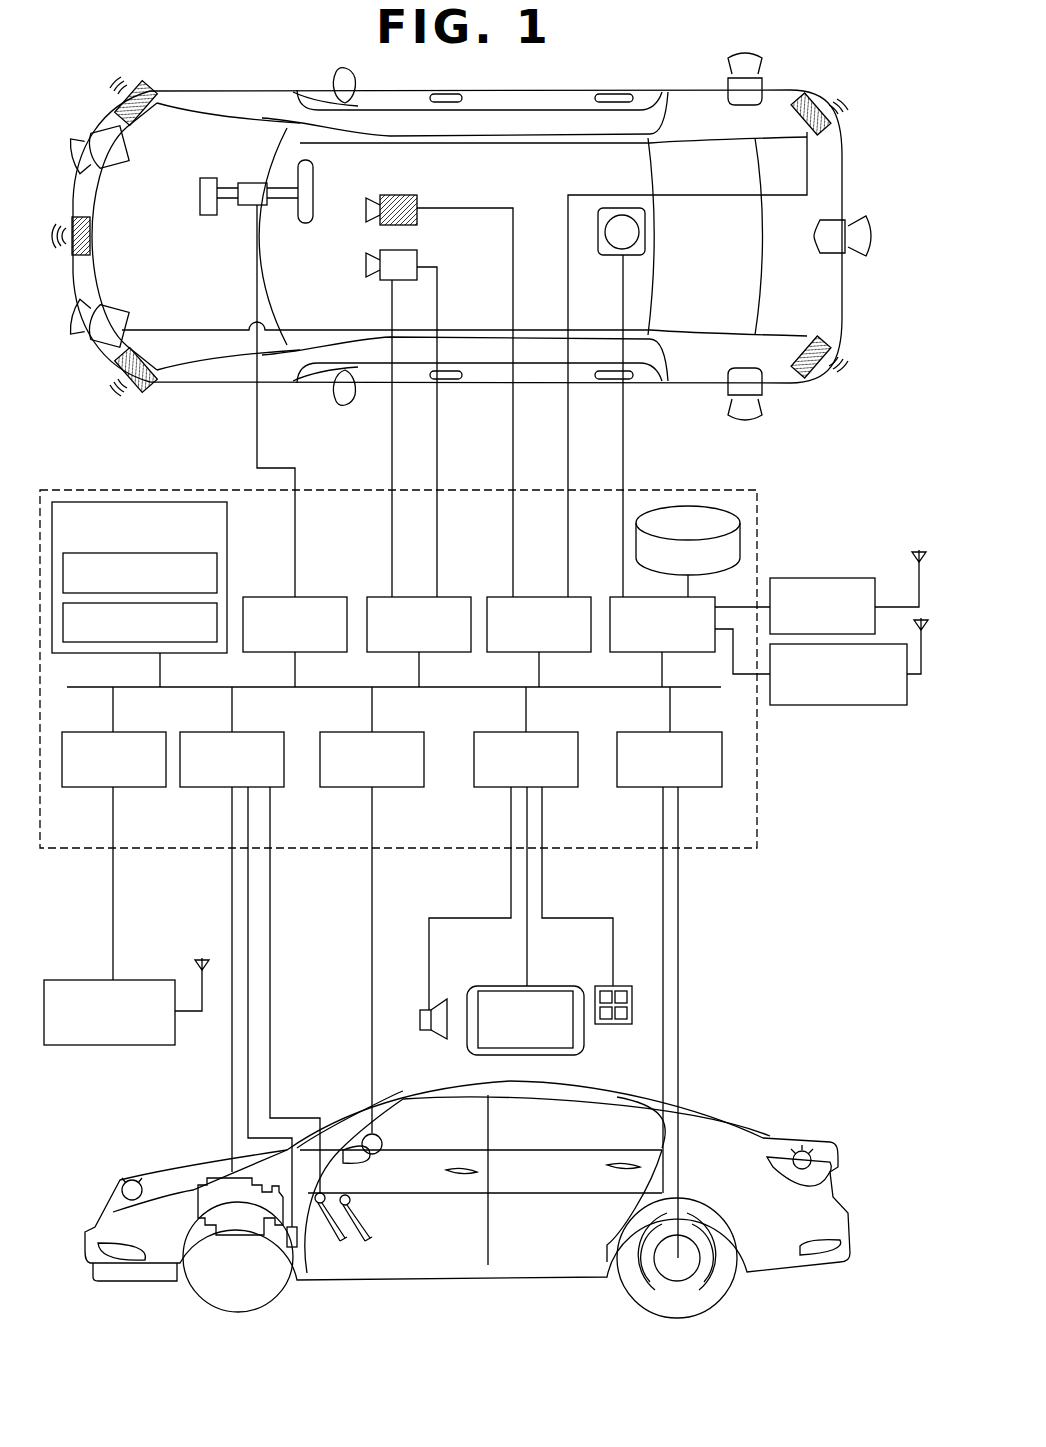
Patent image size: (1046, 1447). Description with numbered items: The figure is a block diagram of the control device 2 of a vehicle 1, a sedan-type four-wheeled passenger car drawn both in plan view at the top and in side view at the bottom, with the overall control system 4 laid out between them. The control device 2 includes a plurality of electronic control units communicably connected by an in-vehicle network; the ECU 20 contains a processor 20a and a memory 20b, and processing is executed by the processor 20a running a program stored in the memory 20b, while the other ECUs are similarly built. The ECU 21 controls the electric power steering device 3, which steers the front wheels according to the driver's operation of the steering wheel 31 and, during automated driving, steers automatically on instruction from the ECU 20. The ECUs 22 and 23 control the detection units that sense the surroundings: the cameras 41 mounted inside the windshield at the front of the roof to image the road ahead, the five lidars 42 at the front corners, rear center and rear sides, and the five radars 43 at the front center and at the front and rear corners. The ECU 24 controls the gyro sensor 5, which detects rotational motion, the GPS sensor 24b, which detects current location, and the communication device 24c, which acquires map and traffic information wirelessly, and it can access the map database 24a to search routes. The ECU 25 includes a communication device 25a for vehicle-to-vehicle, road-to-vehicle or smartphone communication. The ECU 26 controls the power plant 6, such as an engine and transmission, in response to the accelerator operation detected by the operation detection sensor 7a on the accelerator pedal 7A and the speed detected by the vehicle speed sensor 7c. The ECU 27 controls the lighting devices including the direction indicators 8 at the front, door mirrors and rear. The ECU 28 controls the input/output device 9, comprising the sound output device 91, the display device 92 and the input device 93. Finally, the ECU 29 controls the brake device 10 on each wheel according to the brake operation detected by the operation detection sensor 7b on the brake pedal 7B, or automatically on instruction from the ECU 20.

The vehicle 1 is at (851, 152).
The control device 2 is at (757, 852).
The electric power steering device 3 is at (206, 218).
The vehicle control system 4 is at (93, 57).
The gyro sensor 5 is at (646, 232).
The power plant 6 is at (203, 1176).
The operation detection sensor 7a is at (330, 1185).
The operation detection sensor 7b is at (352, 1196).
The vehicle speed sensor 7c is at (292, 1249).
The accelerator pedal 7A is at (350, 1241).
The brake pedal 7B is at (371, 1226).
The direction indicators 8 is at (122, 1186).
The input/output device 9 is at (456, 1057).
The brake device 10 is at (680, 1282).
The ECU 20 is at (165, 552).
The processor 20a is at (205, 553).
The memory 20b is at (205, 603).
The ECU 21 is at (326, 596).
The ECU 22 is at (412, 596).
The ECU 23 is at (539, 596).
The ECU 24 is at (612, 596).
The database 24a is at (686, 505).
The GPS sensor 24b is at (850, 578).
The communication device 24c is at (845, 706).
The ECU 25 is at (139, 789).
The communication device 25a is at (116, 1046).
The ECU 26 is at (213, 789).
The ECU 27 is at (400, 789).
The ECU 28 is at (565, 789).
The ECU 29 is at (702, 789).
The steering wheel 31 is at (304, 226).
The detection units (cameras) 41 is at (418, 206).
The detection units (lidars) 42 is at (114, 166).
The detection units (radars) 43 is at (152, 92).
The sound output device 91 is at (421, 1012).
The display device 92 is at (485, 986).
The input device 93 is at (612, 1025).